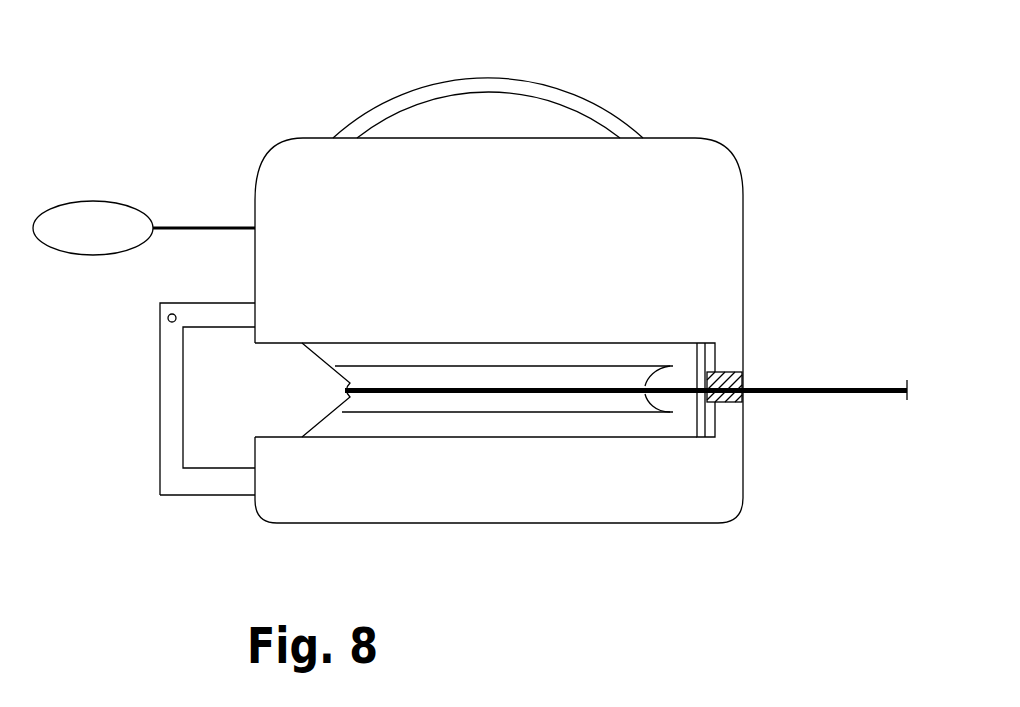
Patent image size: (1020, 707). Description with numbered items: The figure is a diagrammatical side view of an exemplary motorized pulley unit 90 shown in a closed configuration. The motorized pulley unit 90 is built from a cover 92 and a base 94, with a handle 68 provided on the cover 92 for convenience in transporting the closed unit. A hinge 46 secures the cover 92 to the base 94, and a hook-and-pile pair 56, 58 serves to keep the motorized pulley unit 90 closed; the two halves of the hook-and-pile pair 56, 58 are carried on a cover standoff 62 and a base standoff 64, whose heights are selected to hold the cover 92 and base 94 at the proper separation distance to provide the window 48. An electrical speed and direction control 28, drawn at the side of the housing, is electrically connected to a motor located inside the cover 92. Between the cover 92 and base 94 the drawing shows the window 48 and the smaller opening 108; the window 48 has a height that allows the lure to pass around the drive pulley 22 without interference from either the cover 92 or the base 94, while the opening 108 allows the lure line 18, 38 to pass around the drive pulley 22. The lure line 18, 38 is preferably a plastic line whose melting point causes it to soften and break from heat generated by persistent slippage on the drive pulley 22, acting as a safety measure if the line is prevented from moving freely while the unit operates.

The motorized pulley unit 90 is at (763, 60).
The cover 92 is at (733, 167).
The base 94 is at (745, 483).
The handle 68 is at (587, 90).
The electrical speed and direction control 28 is at (78, 198).
The window 48 is at (208, 382).
The hinge 46 is at (222, 495).
The opening 108 is at (280, 390).
The drive pulley 22 is at (423, 430).
The base standoff 64 is at (695, 423).
The cover standoff 62 is at (695, 360).
The hook-and-pile pair 56 is at (743, 388).
The hook-and-pile pair 58 is at (747, 397).
The lure line 18 is at (626, 301).
The lure line 38 is at (876, 384).